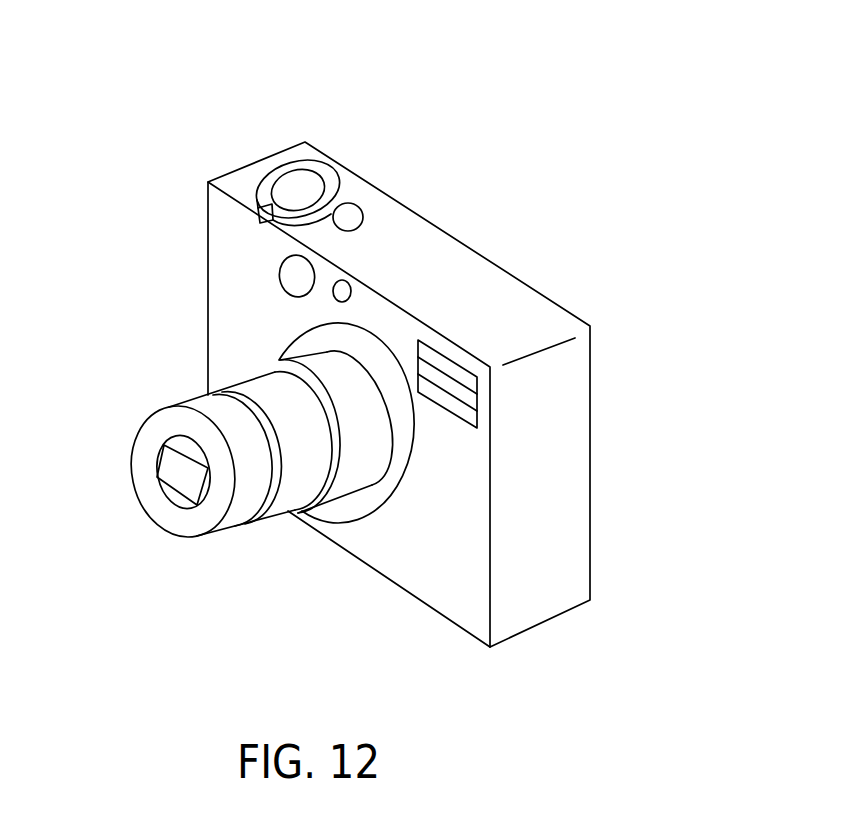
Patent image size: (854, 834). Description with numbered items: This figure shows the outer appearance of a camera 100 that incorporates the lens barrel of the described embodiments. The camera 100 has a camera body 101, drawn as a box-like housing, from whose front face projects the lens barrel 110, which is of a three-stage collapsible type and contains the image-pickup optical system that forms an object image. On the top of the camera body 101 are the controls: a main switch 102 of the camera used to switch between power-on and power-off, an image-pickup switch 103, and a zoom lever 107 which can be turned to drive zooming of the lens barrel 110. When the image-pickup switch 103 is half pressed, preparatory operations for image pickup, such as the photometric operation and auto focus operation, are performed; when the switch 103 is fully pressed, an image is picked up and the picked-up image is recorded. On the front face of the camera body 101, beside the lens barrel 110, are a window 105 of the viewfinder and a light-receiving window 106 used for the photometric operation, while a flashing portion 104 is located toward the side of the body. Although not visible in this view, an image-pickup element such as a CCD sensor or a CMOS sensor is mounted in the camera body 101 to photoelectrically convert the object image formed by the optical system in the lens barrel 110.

The camera 100 is at (348, 348).
The camera body 101 is at (450, 267).
The main switch 102 is at (347, 203).
The image-pickup switch 103 is at (303, 184).
The flashing portion 104 is at (450, 367).
The window of a viewfinder 105 is at (280, 279).
The light-receiving window 106 is at (343, 280).
The zoom lever 107 is at (258, 208).
The lens barrel 110 is at (207, 518).